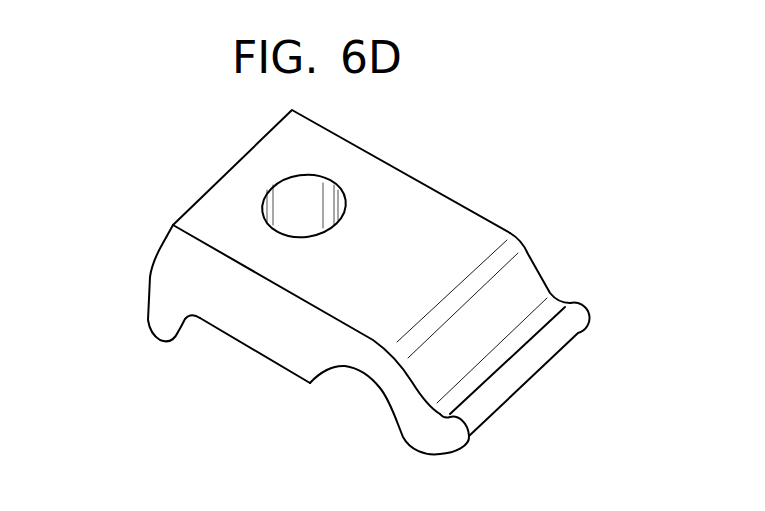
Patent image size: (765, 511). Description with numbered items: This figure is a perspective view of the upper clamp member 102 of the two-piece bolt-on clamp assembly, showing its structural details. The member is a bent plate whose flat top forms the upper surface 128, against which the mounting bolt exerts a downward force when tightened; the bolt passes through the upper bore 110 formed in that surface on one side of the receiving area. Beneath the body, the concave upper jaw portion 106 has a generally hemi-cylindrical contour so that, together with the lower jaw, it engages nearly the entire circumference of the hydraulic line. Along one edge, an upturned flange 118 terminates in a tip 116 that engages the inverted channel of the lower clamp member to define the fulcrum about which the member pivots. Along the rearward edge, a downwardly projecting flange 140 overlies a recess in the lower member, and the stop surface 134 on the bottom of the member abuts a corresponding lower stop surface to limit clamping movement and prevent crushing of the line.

The upper clamp member 102 is at (433, 187).
The upper bore 110 is at (293, 192).
The upper surface 128 is at (233, 218).
The downwardly projecting flange 140 is at (163, 327).
The stop surface 134 is at (250, 348).
The upper jaw portion 106 is at (348, 373).
The tip 116 is at (552, 342).
The upturned flange 118 is at (450, 432).